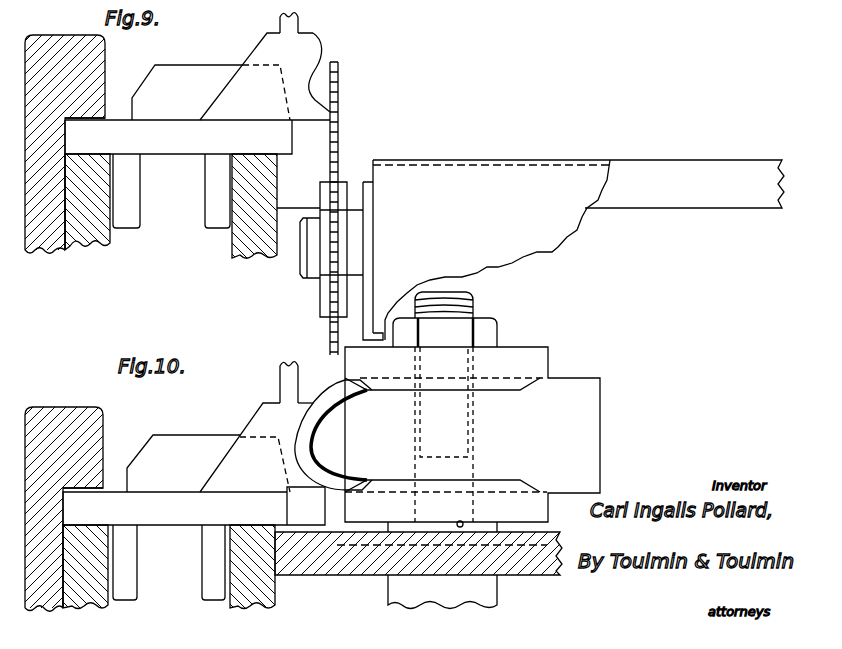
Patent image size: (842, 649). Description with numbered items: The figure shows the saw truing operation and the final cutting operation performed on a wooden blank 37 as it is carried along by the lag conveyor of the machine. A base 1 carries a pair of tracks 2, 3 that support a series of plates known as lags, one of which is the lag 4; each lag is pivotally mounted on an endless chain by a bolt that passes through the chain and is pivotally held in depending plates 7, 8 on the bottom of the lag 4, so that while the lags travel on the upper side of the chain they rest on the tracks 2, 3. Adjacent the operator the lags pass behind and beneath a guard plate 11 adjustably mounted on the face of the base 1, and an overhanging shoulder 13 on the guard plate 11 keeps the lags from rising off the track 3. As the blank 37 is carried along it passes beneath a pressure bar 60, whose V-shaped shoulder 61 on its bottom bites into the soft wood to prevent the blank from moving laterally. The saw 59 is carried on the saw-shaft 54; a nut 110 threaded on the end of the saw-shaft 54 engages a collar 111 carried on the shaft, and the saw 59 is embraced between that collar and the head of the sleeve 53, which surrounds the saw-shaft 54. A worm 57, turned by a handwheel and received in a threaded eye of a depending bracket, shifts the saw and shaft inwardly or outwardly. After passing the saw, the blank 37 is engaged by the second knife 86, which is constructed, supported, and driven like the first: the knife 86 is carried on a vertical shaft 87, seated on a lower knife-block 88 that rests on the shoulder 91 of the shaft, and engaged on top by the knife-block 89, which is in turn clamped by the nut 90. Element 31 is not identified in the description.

In FIG. 9, the base 1 is at (643, 170).
In FIG. 10, the base 1 is at (345, 572).
In FIG. 9, the track 2 is at (97, 250).
In FIG. 10, the track 2 is at (97, 552).
In FIG. 9, the track 3 is at (238, 255).
In FIG. 10, the track 3 is at (270, 607).
In FIG. 9, the lag 4 is at (135, 133).
In FIG. 10, the lag 4 is at (165, 502).
In FIG. 9, the depending plate 7 is at (132, 219).
In FIG. 10, the depending plate 7 is at (123, 581).
In FIG. 9, the depending plate 8 is at (218, 223).
In FIG. 10, the depending plate 8 is at (208, 569).
In FIG. 9, the guard plate 11 is at (50, 47).
In FIG. 10, the guard plate 11 is at (45, 423).
In FIG. 9, the overhanging shoulder 13 is at (96, 98).
In FIG. 10, the overhanging shoulder 13 is at (97, 478).
In FIG. 9, the clamp body 31 is at (173, 76).
In FIG. 10, the clamp body 31 is at (200, 455).
In FIG. 9, the blank 37 is at (314, 34).
In FIG. 10, the blank 37 is at (262, 404).
In FIG. 9, the sleeve 53 is at (380, 210).
In FIG. 9, the saw-shaft 54 is at (307, 258).
In FIG. 9, the worm 57 is at (420, 4).
In FIG. 9, the saw 59 is at (339, 67).
In FIG. 9, the pressure bar 60 is at (281, 21).
In FIG. 10, the pressure bar 60 is at (290, 360).
In FIG. 9, the V-shaped shoulder 61 is at (290, 36).
In FIG. 10, the V-shaped shoulder 61 is at (285, 410).
In FIG. 10, the knife 86 is at (320, 402).
In FIG. 10, the vertical shaft 87 is at (477, 298).
In FIG. 10, the lower knife-block 88 is at (495, 482).
In FIG. 10, the knife-block 89 is at (540, 345).
In FIG. 10, the nut 90 is at (488, 323).
In FIG. 10, the shoulder 91 is at (460, 522).
In FIG. 9, the nut 110 is at (309, 278).
In FIG. 9, the collar 111 is at (322, 303).